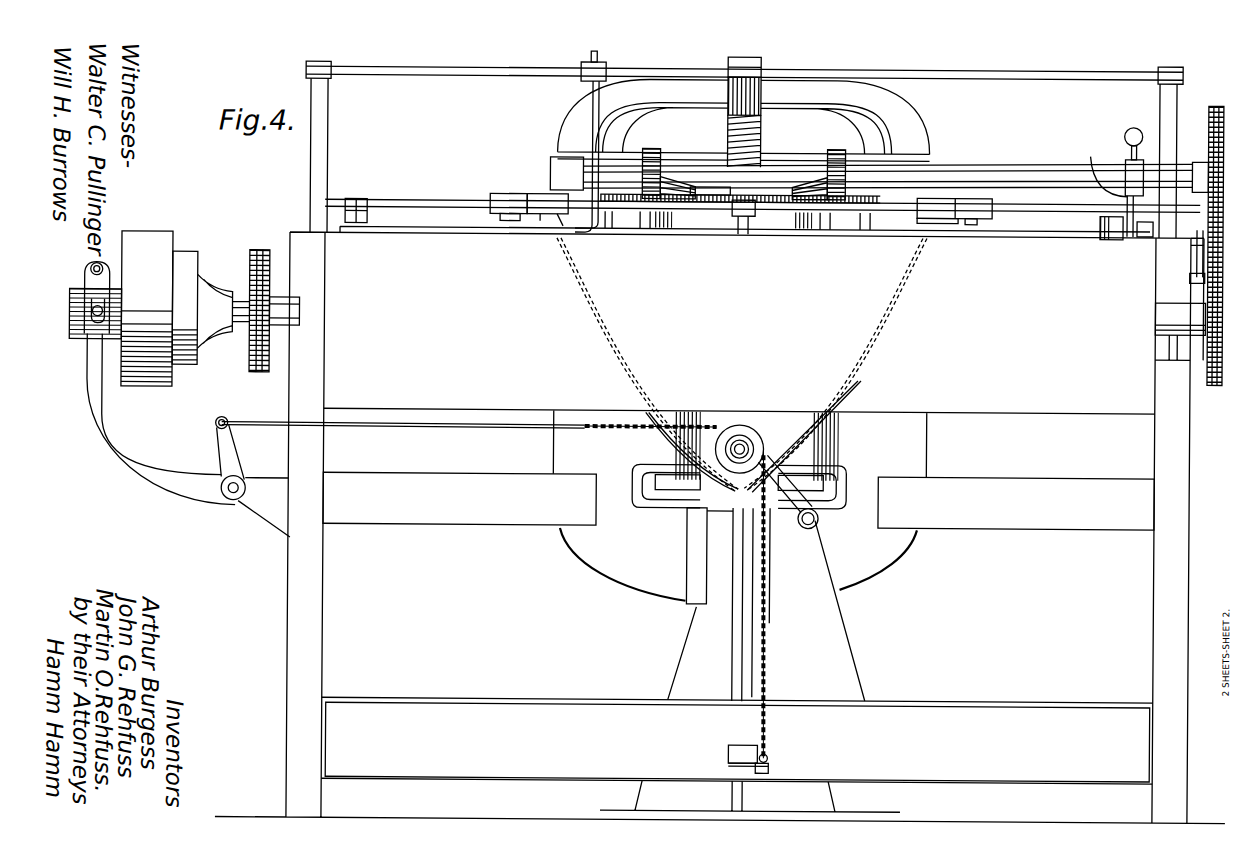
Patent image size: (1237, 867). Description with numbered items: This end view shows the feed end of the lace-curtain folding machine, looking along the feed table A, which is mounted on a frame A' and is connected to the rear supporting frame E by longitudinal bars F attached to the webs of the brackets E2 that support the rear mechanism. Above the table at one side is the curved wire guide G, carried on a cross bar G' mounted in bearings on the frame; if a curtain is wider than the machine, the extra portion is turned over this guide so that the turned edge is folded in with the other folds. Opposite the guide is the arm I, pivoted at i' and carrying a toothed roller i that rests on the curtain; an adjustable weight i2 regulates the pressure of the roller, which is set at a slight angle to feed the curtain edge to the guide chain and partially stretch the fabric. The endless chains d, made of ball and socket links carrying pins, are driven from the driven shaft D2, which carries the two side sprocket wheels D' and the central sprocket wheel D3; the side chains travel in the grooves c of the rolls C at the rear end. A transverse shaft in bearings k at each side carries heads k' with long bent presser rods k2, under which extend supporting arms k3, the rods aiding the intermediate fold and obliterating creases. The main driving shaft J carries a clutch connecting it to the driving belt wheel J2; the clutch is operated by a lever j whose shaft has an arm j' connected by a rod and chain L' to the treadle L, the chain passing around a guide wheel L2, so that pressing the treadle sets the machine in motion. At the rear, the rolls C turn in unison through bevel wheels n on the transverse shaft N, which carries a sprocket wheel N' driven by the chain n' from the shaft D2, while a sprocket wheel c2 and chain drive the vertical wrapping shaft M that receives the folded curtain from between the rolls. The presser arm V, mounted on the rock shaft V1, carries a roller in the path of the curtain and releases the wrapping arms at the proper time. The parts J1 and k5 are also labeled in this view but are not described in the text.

The feed table A is at (738, 465).
The frame A' is at (722, 528).
The longitudinal bars F is at (738, 501).
The rear supporting frame E is at (767, 605).
The brackets E2 is at (742, 493).
The guide wheel L2 is at (748, 424).
The rod and chain L' is at (492, 590).
The treadle L is at (723, 759).
The presser rods k2 is at (590, 302).
The cross bar G' is at (744, 143).
The curved guide G is at (745, 244).
The side sprocket wheels D' is at (367, 214).
The bearings k is at (762, 208).
The supporting arms k3 is at (512, 214).
The heads k' is at (757, 232).
The stop k5 is at (973, 219).
The vertical shaft M is at (756, 150).
The transverse shaft N is at (872, 163).
The sprocket wheel N' is at (1196, 150).
The bevel wheels n is at (743, 164).
The grooves c is at (672, 189).
The rolls C is at (668, 232).
The sprocket wheel c2 is at (650, 199).
The central sprocket wheel D3 is at (743, 233).
The adjustable weight i2 is at (1133, 132).
The pivot i' is at (1123, 171).
The arm I is at (1110, 189).
The toothed roller i is at (1111, 244).
The presser arm V is at (1145, 232).
The rock shaft V1 is at (1200, 264).
The drive chain n' is at (1207, 229).
The endless chain links d is at (1212, 370).
The driving belt wheel J2 is at (147, 308).
The loose pulley J1 is at (190, 257).
The main driving shaft J is at (243, 304).
The driven shaft D2 is at (275, 333).
The lever j is at (180, 399).
The arm j' is at (215, 457).